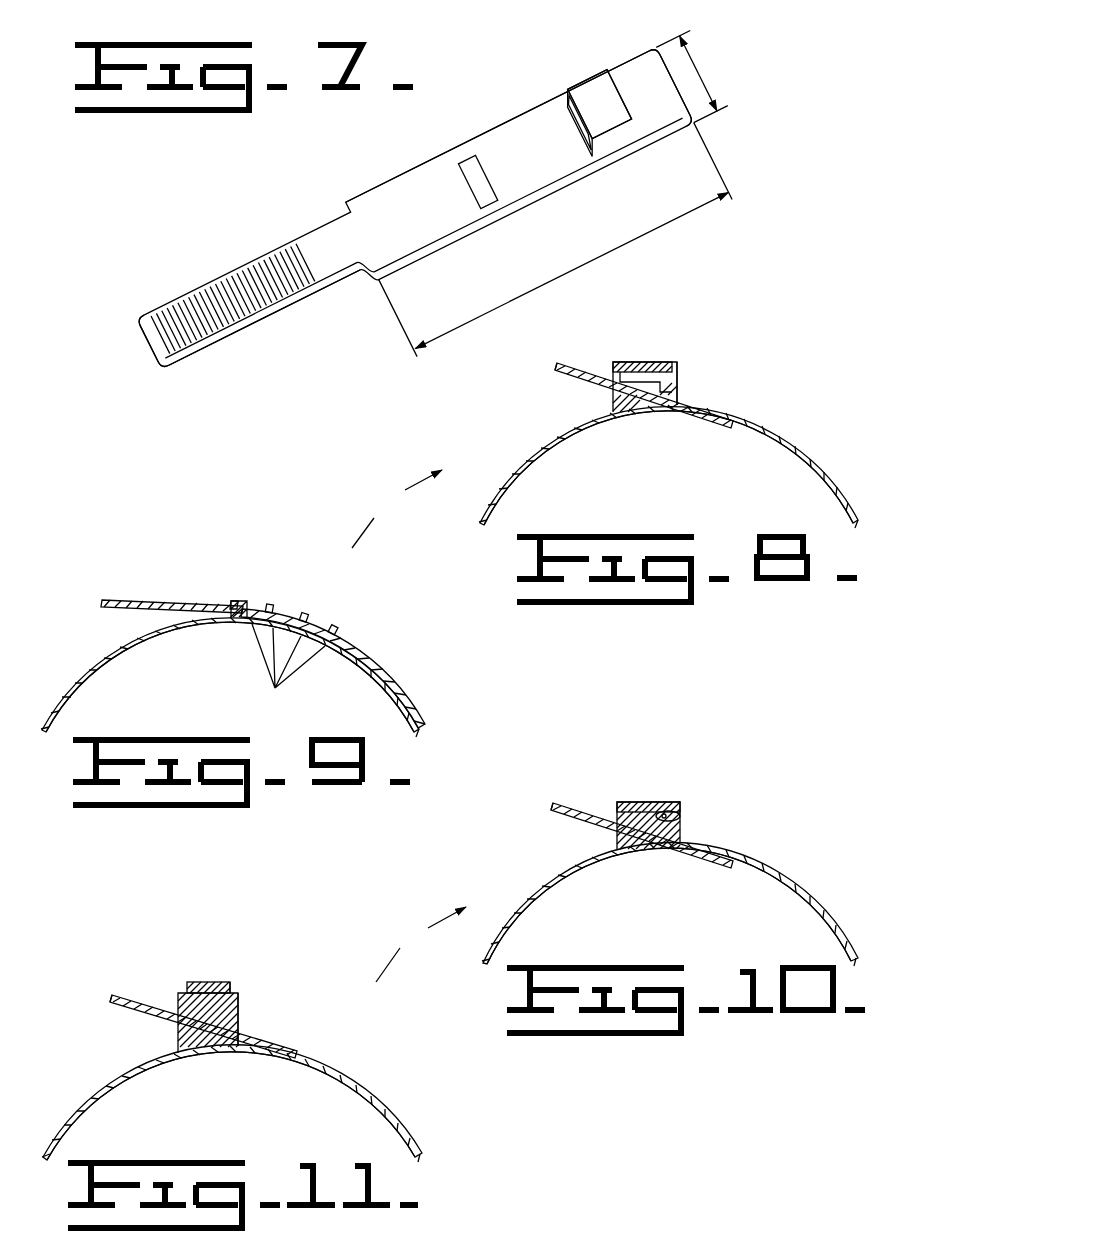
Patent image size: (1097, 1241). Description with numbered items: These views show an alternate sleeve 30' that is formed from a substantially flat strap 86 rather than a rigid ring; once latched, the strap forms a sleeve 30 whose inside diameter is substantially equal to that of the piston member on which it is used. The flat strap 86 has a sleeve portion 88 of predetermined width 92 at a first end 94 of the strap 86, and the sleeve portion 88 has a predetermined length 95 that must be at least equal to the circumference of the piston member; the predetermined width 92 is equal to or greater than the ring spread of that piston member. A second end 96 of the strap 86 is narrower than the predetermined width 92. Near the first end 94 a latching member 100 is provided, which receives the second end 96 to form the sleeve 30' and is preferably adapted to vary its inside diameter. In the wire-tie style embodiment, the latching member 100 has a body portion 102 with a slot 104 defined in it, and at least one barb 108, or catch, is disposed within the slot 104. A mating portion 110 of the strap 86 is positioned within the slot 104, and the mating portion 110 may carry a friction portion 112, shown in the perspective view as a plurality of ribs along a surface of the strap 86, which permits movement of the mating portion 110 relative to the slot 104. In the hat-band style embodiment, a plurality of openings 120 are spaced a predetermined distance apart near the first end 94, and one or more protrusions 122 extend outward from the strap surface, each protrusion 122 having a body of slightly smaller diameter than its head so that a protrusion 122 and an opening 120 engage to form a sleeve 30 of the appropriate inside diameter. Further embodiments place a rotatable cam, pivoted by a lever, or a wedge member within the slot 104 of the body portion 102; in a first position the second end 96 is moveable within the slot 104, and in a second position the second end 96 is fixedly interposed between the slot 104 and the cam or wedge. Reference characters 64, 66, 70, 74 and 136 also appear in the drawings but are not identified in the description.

In FIG. 11, the sleeve 30 is at (421, 944).
In FIG. 9, the alternate sleeve 30' is at (397, 509).
In FIG. 8, the band 64 is at (738, 412).
In FIG. 9, the band 64 is at (170, 628).
In FIG. 10, the band 64 is at (787, 880).
In FIG. 11, the band 64 is at (167, 1053).
In FIG. 7, the side edge 66 is at (536, 200).
In FIG. 8, the pad 70 is at (790, 452).
In FIG. 9, the pad 70 is at (97, 670).
In FIG. 10, the pad 70 is at (550, 889).
In FIG. 11, the pad 70 is at (80, 1109).
In FIG. 7, the slot 74 is at (464, 162).
In FIG. 7, the flat strap 86 is at (430, 228).
In FIG. 7, the sleeve portion 88 is at (536, 138).
In FIG. 7, the predetermined width 92 is at (707, 73).
In FIG. 7, the first end 94 is at (668, 117).
In FIG. 9, the first end 94 is at (137, 602).
In FIG. 7, the predetermined length 95 is at (627, 246).
In FIG. 7, the second end 96 is at (152, 327).
In FIG. 8, the second end 96 is at (578, 366).
In FIG. 9, the second end 96 is at (377, 688).
In FIG. 10, the second end 96 is at (575, 804).
In FIG. 11, the second end 96 is at (152, 1003).
In FIG. 7, the latching member 100 is at (568, 70).
In FIG. 8, the latching member 100 is at (629, 362).
In FIG. 9, the latching member 100 is at (222, 578).
In FIG. 10, the latching member 100 is at (603, 775).
In FIG. 11, the latching member 100 is at (184, 962).
In FIG. 7, the body portion 102 is at (590, 88).
In FIG. 10, the body portion 102 is at (667, 802).
In FIG. 11, the body portion 102 is at (225, 982).
In FIG. 7, the slot 104 is at (583, 128).
In FIG. 8, the slot 104 is at (578, 388).
In FIG. 10, the slot 104 is at (580, 836).
In FIG. 11, the slot 104 is at (140, 1027).
In FIG. 8, the barb 108 is at (650, 366).
In FIG. 7, the mating portion 110 is at (304, 315).
In FIG. 8, the mating portion 110 is at (700, 381).
In FIG. 10, the mating portion 110 is at (696, 808).
In FIG. 11, the mating portion 110 is at (258, 1018).
In FIG. 7, the friction portion 112 is at (268, 245).
In FIG. 9, the openings 120 is at (277, 688).
In FIG. 9, the protrusions 122 is at (268, 605).
In FIG. 11, the cam surface 136 is at (245, 1007).